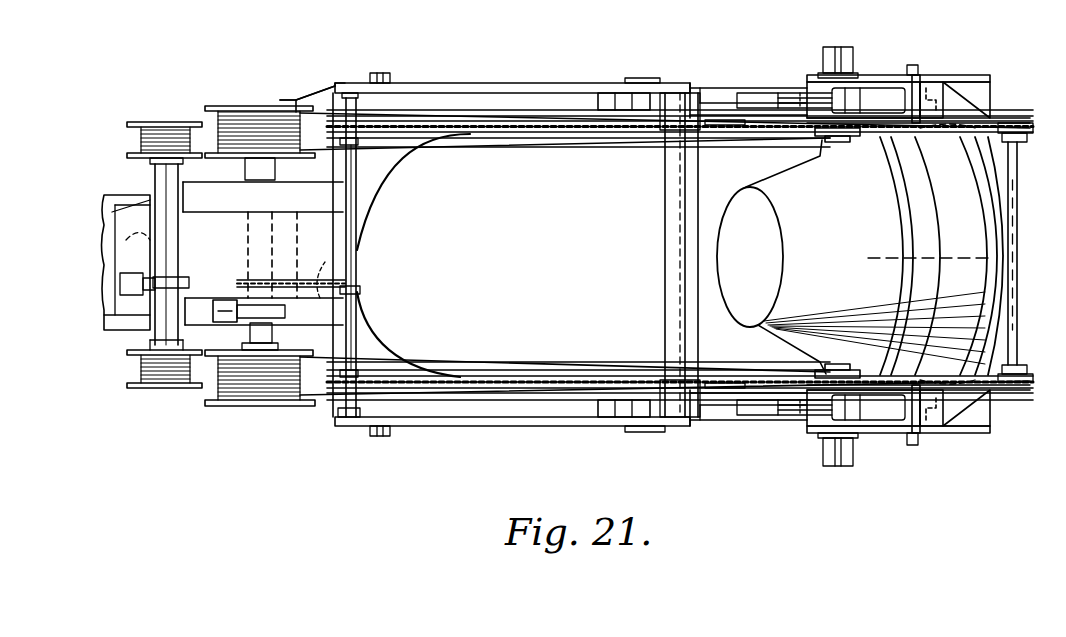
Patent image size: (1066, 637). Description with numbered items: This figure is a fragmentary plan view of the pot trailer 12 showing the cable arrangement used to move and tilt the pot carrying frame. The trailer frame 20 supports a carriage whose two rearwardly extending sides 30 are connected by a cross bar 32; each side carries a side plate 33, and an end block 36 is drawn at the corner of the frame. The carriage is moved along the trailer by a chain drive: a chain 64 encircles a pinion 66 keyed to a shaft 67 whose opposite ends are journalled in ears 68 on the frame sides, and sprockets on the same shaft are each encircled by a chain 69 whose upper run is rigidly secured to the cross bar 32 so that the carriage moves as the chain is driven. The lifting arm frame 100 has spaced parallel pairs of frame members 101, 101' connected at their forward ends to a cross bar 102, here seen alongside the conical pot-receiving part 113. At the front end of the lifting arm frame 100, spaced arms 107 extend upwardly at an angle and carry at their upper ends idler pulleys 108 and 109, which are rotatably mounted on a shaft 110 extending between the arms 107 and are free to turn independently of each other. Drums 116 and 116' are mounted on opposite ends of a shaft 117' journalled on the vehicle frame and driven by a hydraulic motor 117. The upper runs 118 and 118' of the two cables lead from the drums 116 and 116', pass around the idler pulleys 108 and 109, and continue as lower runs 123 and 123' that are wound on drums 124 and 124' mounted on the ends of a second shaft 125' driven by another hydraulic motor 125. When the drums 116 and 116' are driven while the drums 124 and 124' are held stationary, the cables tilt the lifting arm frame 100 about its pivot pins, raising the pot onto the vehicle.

The pot trailer 12 is at (318, 92).
The trailer frame 20 is at (296, 100).
The rearwardly extending side of carriage 30 is at (768, 100).
The cross bar 32 is at (666, 190).
The side plate 33 is at (790, 96).
The end block 36 is at (652, 95).
The chain 64 is at (358, 250).
The pinion 66 is at (362, 292).
The shaft 67 is at (374, 191).
The ear 68 is at (343, 426).
The chain 69 is at (518, 133).
The lifting arm frame 100 is at (820, 75).
The frame member 101 is at (918, 248).
The frame member 101' is at (796, 253).
The cross bar 102 is at (906, 223).
The arm 107 is at (990, 100).
The idler pulley 108 is at (1028, 376).
The idler pulley 109 is at (1036, 126).
The shaft 110 is at (1016, 185).
The conical nozzle 113 is at (720, 238).
The drum 116 is at (147, 383).
The drum 116' is at (136, 126).
The hydraulic motor 117 is at (114, 262).
The shaft 117' is at (112, 255).
The upper run of cable 118 is at (493, 351).
The upper run of cable 118' is at (722, 204).
The lower run of cable 123 is at (395, 453).
The lower run of cable 123' is at (406, 80).
The drum 124 is at (257, 384).
The drum 124' is at (243, 124).
The hydraulic motor 125 is at (237, 282).
The shaft 125' is at (267, 258).